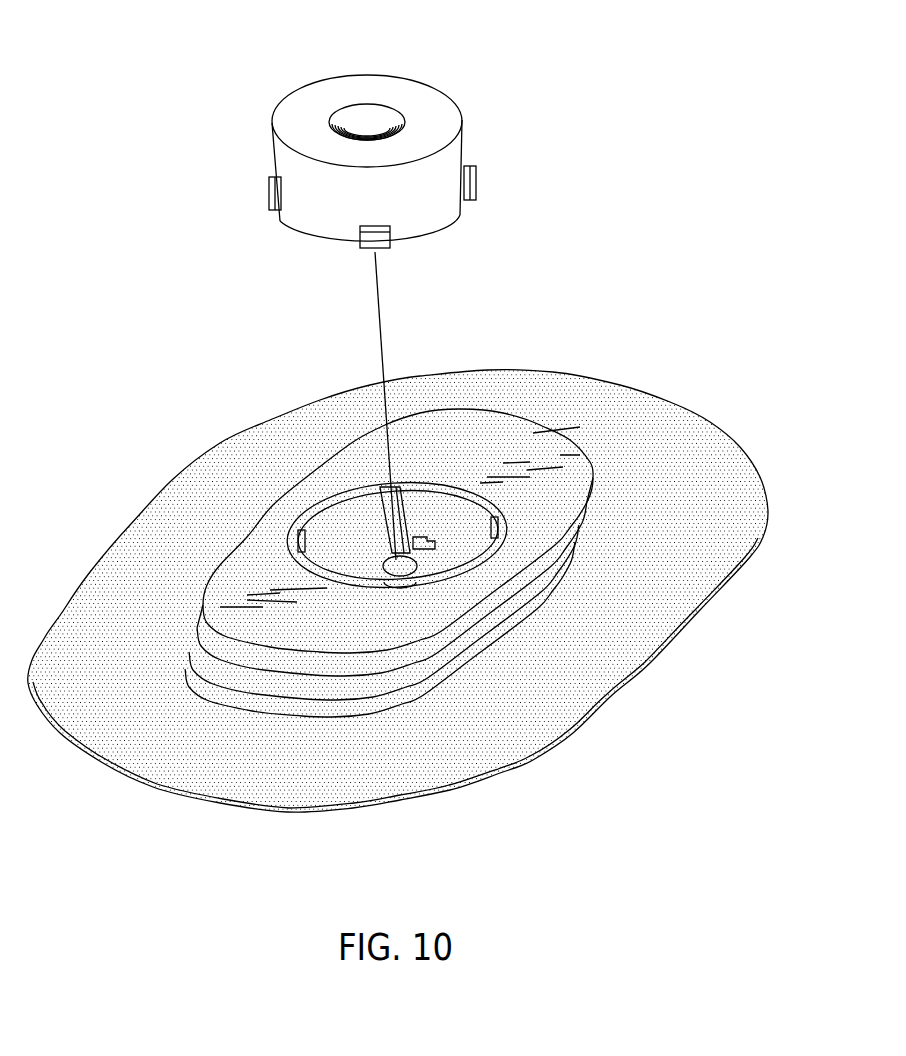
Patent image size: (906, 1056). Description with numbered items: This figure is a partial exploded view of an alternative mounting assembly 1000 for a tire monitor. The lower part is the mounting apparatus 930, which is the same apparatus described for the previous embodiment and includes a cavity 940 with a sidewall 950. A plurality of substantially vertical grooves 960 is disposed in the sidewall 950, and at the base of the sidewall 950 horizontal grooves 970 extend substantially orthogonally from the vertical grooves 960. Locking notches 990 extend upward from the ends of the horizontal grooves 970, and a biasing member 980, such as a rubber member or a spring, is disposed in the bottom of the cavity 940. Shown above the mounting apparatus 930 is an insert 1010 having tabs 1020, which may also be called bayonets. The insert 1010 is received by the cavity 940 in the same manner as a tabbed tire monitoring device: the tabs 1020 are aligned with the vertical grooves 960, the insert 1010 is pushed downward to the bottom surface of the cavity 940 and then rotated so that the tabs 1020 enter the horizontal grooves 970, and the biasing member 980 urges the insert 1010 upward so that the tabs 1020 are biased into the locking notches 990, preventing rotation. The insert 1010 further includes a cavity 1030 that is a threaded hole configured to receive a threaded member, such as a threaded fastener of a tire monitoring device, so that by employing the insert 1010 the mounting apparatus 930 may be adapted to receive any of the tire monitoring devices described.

The mounting assembly 1000 is at (137, 79).
The insert 1010 is at (423, 93).
The tabs 1020 is at (470, 167).
The cavity 1030 is at (357, 117).
The mounting apparatus 930 is at (457, 760).
The cavity 940 is at (333, 517).
The sidewall 950 is at (467, 523).
The substantially vertical grooves 960 is at (385, 485).
The horizontal grooves 970 is at (420, 488).
The biasing member 980 is at (393, 552).
The locking notches 990 is at (478, 560).